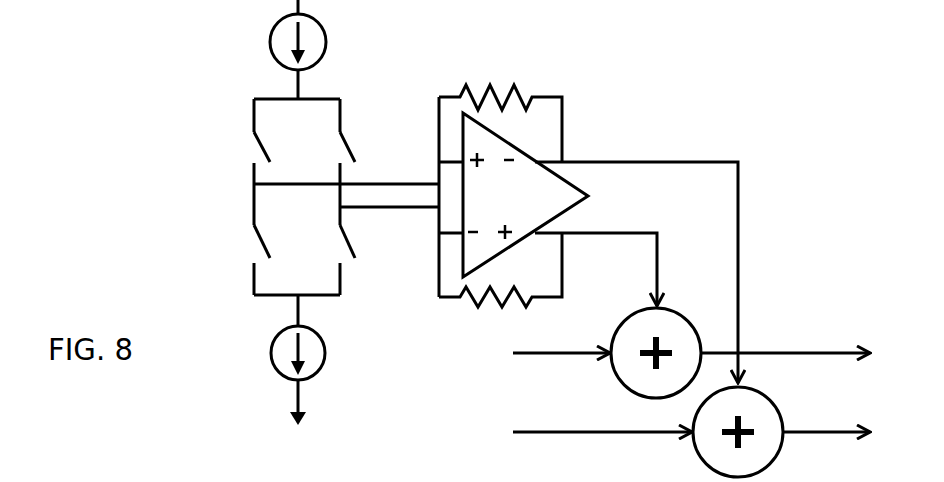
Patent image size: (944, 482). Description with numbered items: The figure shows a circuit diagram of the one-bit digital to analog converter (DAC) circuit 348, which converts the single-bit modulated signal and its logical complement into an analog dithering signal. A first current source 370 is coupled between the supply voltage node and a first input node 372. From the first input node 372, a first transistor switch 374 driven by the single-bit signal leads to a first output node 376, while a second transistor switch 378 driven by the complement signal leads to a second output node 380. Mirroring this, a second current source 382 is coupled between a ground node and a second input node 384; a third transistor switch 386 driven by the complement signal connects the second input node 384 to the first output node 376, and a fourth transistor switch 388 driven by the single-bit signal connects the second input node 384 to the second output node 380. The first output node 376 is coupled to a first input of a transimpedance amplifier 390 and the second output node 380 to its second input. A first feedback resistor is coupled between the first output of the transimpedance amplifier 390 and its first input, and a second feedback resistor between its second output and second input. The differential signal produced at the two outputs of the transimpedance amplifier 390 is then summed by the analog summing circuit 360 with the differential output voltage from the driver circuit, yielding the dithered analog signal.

The 1-bit digital to analog converter (DAC) circuit 348 is at (165, 70).
The first current source 370 is at (269, 41).
The first input node 372 is at (340, 99).
The first transistor switch 374 is at (242, 132).
The first output node 376 is at (252, 193).
The second transistor switch 378 is at (352, 137).
The second output node 380 is at (340, 203).
The second current source 382 is at (271, 356).
The second input node 384 is at (336, 300).
The third transistor switch 386 is at (245, 230).
The fourth transistor switch 388 is at (352, 239).
The transimpedance amplifier 390 is at (529, 208).
The analog summing circuit 360 is at (770, 322).